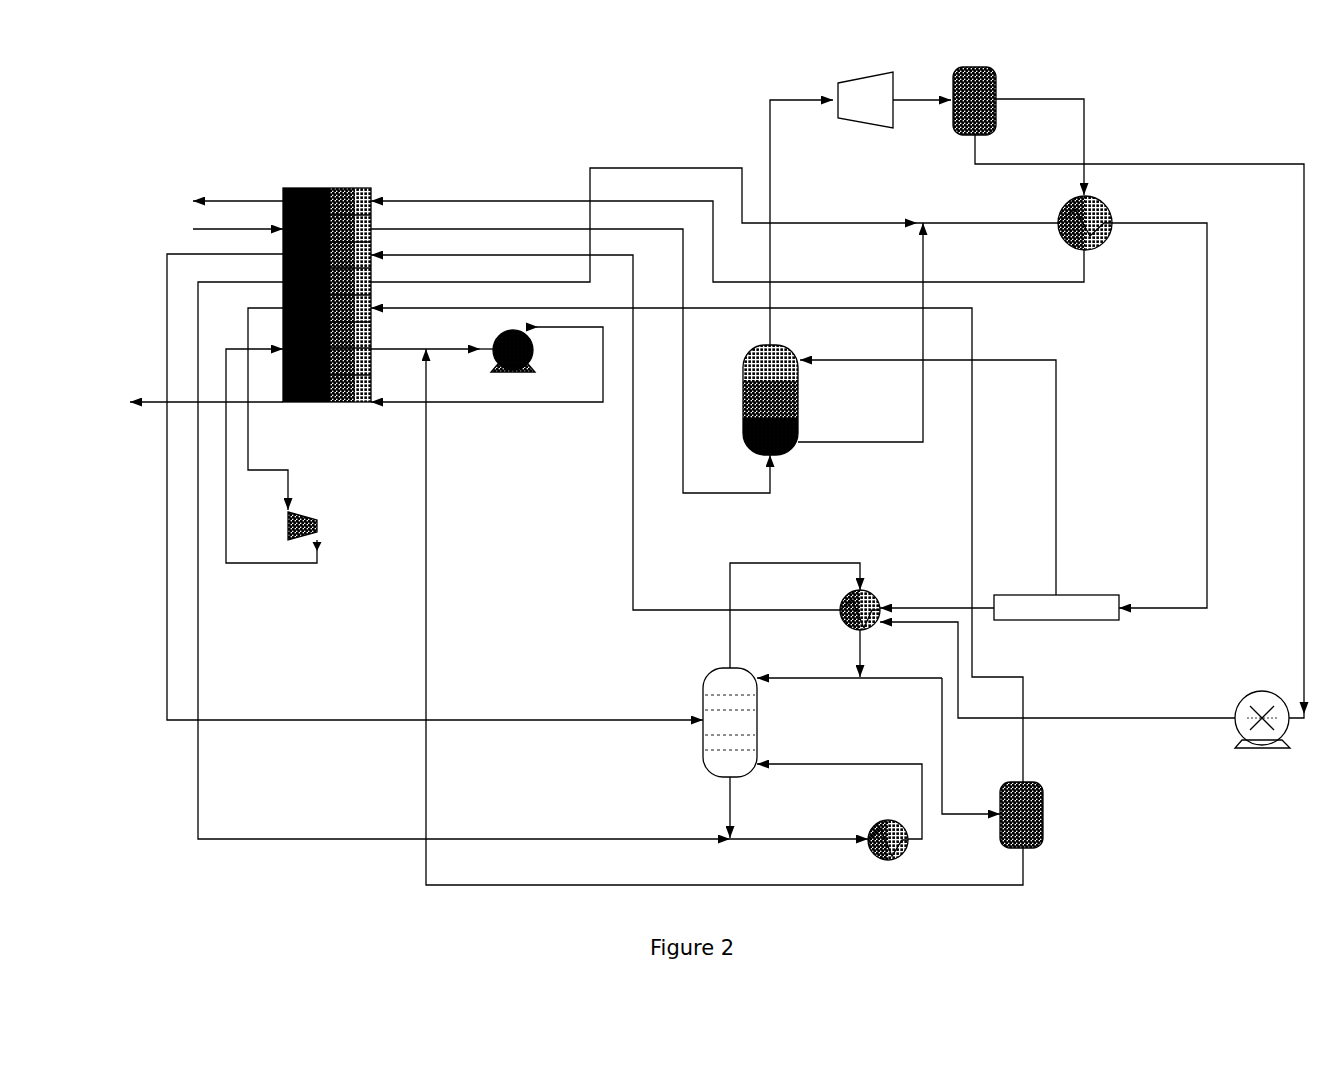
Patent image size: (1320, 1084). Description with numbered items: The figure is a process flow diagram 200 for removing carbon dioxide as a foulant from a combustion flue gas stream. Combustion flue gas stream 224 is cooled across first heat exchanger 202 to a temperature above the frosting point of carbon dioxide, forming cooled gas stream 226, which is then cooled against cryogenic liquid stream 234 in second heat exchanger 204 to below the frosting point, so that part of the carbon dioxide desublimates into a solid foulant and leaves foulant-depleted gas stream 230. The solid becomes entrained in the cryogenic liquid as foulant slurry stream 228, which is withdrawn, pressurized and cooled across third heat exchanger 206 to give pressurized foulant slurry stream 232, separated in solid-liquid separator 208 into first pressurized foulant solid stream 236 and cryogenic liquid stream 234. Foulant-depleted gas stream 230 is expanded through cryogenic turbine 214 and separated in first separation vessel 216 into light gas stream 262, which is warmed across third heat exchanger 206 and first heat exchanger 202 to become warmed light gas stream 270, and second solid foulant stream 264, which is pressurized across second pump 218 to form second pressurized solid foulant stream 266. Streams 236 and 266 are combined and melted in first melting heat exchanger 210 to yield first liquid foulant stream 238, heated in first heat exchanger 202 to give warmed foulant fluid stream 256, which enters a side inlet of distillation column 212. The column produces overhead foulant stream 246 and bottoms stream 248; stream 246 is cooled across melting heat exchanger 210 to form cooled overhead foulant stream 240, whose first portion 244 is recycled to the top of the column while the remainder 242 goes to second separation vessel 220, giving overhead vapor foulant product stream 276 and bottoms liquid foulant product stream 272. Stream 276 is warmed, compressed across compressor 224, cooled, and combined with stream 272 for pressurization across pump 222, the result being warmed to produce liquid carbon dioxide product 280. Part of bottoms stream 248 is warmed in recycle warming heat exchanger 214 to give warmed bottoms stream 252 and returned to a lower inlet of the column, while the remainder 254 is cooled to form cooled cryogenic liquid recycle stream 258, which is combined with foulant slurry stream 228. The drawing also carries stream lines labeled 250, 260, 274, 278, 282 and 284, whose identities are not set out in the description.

The process flow diagram 200 is at (296, 88).
The first heat exchanger 202 is at (283, 187).
The second heat exchanger 204 is at (746, 351).
The third heat exchanger 206 is at (1064, 209).
The solid-liquid separator 208 is at (1068, 621).
The first melting heat exchanger 210 is at (877, 596).
The distillation column 212 is at (703, 672).
The cryogenic turbine 214 is at (852, 83).
The first separation vessel 216 is at (978, 66).
The second pump 218 is at (1239, 702).
The second separation vessel 220 is at (1045, 828).
The pump 222 is at (535, 352).
The combustion flue gas stream 224 is at (336, 529).
The cooled gas stream 226 is at (570, 350).
The foulant slurry stream 228 is at (860, 333).
The foulant-depleted gas stream 230 is at (786, 222).
The pressurized foulant slurry stream 232 is at (1159, 415).
The cryogenic liquid stream 234 is at (931, 464).
The first pressurized foulant solid stream 236 is at (937, 600).
The first liquid foulant stream 238 is at (605, 433).
The cooled overhead foulant stream 240 is at (881, 653).
The remainder of cooled overhead foulant stream 242 is at (952, 734).
The first portion of cooled overhead foulant stream 244 is at (849, 666).
The overhead foulant stream 246 is at (795, 601).
The bottoms stream 248 is at (713, 807).
The stream 250 is at (799, 828).
The warmed bottoms stream 252 is at (839, 790).
The remainder of bottoms stream 254 is at (464, 561).
The warmed foulant fluid stream 256 is at (435, 488).
The cooled cryogenic liquid recycle stream 258 is at (714, 214).
The compressed stream 260 is at (922, 88).
The light gas stream 262 is at (1040, 134).
The second solid foulant stream 264 is at (1142, 426).
The second pressurized solid foulant stream 266 is at (1057, 670).
The warmed light gas stream 270 is at (221, 201).
The bottoms liquid foulant product stream 272 is at (724, 618).
The stream 274 is at (432, 339).
The overhead vapor foulant product stream 276 is at (697, 545).
The stream 278 is at (487, 363).
The liquid carbon dioxide product 280 is at (189, 402).
The stream 282 is at (280, 409).
The stream 284 is at (274, 458).